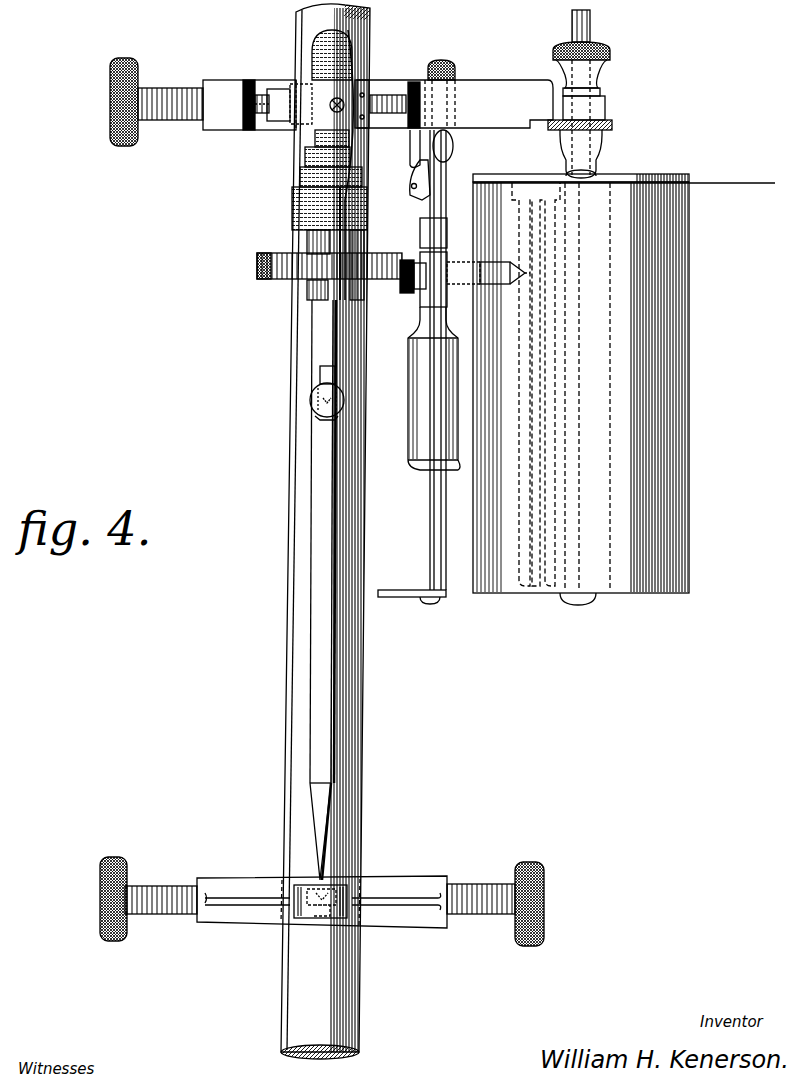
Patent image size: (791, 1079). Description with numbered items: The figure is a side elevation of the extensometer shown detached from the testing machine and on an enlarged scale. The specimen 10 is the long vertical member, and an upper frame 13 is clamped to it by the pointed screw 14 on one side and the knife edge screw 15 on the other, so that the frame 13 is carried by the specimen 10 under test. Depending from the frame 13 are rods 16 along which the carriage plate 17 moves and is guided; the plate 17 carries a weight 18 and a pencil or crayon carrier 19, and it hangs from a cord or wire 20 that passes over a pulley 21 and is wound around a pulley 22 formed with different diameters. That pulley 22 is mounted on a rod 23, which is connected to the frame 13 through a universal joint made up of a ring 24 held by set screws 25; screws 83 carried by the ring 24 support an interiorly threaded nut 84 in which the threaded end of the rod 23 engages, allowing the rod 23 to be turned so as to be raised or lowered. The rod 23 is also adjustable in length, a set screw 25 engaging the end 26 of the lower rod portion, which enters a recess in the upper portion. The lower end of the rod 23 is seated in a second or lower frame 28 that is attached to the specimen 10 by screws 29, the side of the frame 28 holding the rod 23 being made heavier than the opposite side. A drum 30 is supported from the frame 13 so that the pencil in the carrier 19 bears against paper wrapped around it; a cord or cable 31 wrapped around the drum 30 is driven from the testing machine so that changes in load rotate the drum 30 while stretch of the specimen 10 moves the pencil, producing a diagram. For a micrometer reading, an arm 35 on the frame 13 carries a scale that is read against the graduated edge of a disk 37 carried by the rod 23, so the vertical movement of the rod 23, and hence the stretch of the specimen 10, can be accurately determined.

The specimen 10 is at (292, 677).
The frame 13 is at (454, 104).
The pointed screw 14 is at (190, 74).
The knife edge screw 15 is at (440, 62).
The rods 16 is at (432, 555).
The carriage plate 17 is at (447, 256).
The weight 18 is at (415, 398).
The pencil or crayon carrier 19 is at (470, 282).
The cord or wire 20 is at (412, 175).
The pulley 21 is at (411, 193).
The pulley 22 is at (300, 195).
The rod 23 is at (312, 598).
The ring 24 is at (302, 113).
The set screws 25 is at (258, 95).
The end of lower portion of rod 26 is at (320, 370).
The second or lower frame 28 is at (322, 889).
The screws 29 is at (322, 898).
The drum 30 is at (599, 387).
The cord or cable 31 is at (624, 97).
The arm 35 is at (307, 240).
The disk 37 is at (258, 262).
The screws 83 is at (332, 100).
The interiorly threaded nut 84 is at (312, 150).